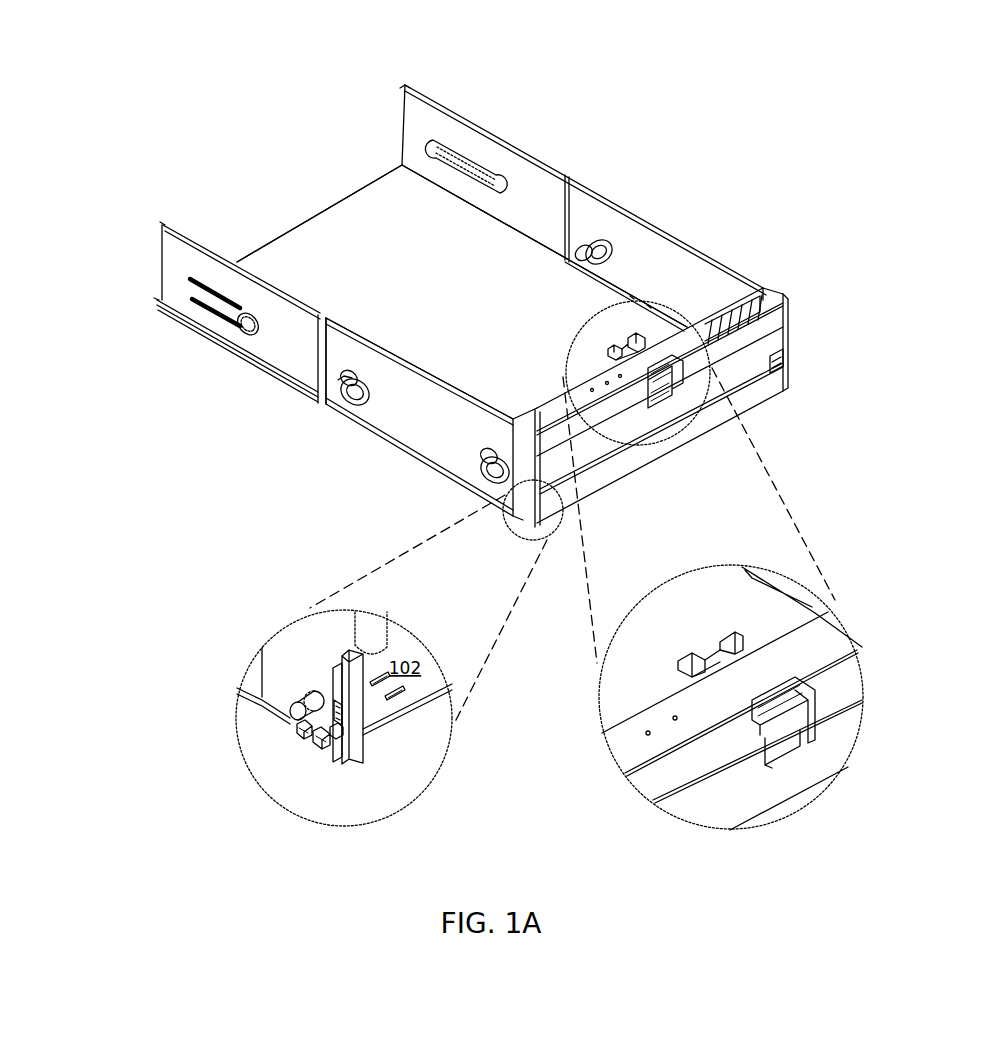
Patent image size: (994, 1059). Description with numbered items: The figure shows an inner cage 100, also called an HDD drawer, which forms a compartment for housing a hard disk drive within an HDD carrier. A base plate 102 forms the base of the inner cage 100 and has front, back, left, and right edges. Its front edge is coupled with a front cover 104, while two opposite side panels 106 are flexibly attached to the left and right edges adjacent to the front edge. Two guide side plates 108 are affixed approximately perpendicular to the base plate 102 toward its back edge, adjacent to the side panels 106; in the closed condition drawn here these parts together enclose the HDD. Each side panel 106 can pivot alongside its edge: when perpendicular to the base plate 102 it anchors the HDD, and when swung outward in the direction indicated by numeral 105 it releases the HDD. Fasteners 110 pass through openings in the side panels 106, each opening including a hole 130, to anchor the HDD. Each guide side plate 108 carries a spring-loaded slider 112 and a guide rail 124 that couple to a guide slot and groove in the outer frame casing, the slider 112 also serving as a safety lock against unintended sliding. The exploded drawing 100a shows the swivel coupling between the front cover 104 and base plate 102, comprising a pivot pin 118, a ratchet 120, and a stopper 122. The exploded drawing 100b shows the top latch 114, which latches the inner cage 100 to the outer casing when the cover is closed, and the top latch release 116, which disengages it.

The inner cage 100 is at (460, 52).
The exploded drawing 100a is at (246, 611).
The exploded drawing 100b is at (676, 566).
The base plate 102 is at (358, 247).
The front cover 104 is at (695, 845).
The direction of outward swing 105 is at (403, 423).
The side panel 106 is at (437, 433).
The guide side plate 108 is at (285, 337).
The fastener 110 is at (494, 466).
The slider 112 is at (238, 320).
The top latch 114 is at (728, 657).
The top latch release 116 is at (798, 700).
The pivot pin 118 is at (292, 717).
The ratchet 120 is at (327, 723).
The stopper 122 is at (320, 748).
The guide rail 124 is at (158, 305).
The hole 130 is at (340, 397).